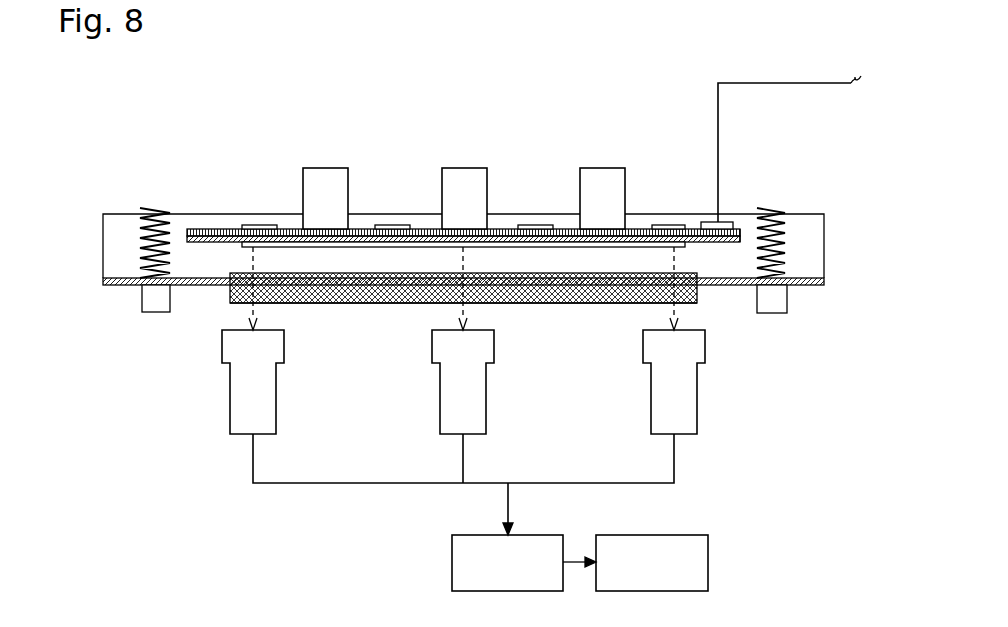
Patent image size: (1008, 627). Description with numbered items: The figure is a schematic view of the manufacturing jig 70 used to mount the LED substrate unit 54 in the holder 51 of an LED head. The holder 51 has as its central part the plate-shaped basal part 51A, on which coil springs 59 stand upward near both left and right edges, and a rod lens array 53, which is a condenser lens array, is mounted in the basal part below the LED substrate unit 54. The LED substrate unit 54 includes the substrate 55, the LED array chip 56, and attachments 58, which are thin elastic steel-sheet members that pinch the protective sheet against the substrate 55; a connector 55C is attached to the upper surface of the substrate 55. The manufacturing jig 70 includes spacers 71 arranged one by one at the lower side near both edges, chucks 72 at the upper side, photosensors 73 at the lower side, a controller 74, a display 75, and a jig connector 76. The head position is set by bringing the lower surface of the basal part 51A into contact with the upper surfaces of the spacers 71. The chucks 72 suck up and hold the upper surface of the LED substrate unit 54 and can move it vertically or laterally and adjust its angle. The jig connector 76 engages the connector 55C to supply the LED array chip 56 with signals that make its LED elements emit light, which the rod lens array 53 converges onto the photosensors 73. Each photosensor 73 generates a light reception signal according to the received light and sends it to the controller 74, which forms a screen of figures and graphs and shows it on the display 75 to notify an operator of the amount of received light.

The holder 51 is at (802, 214).
The basal part 51A is at (187, 283).
The rod lens array 53 is at (392, 300).
The LED substrate unit 54 is at (498, 225).
The substrate 55 is at (213, 229).
The connector 55C is at (742, 228).
The LED array chip 56 is at (347, 297).
The attachments 58 is at (258, 225).
The coil springs 59 is at (158, 206).
The manufacturing jig 70 is at (138, 444).
The spacers 71 is at (148, 316).
The chucks 72 is at (315, 168).
The photosensors 73 is at (231, 410).
The controller 74 is at (525, 534).
The display 75 is at (680, 534).
The jig connector 76 is at (710, 222).